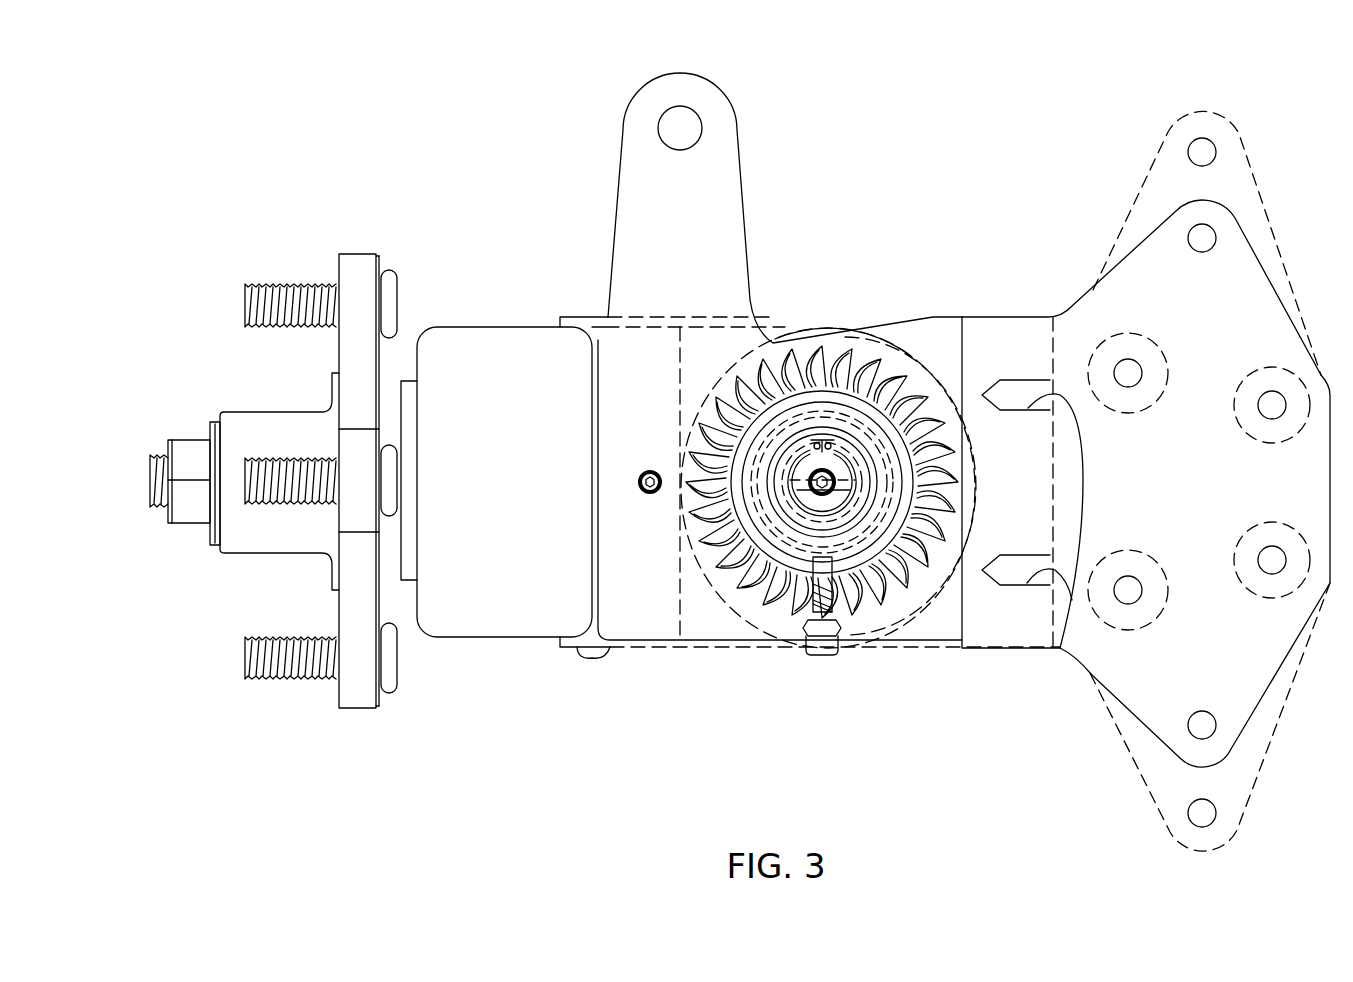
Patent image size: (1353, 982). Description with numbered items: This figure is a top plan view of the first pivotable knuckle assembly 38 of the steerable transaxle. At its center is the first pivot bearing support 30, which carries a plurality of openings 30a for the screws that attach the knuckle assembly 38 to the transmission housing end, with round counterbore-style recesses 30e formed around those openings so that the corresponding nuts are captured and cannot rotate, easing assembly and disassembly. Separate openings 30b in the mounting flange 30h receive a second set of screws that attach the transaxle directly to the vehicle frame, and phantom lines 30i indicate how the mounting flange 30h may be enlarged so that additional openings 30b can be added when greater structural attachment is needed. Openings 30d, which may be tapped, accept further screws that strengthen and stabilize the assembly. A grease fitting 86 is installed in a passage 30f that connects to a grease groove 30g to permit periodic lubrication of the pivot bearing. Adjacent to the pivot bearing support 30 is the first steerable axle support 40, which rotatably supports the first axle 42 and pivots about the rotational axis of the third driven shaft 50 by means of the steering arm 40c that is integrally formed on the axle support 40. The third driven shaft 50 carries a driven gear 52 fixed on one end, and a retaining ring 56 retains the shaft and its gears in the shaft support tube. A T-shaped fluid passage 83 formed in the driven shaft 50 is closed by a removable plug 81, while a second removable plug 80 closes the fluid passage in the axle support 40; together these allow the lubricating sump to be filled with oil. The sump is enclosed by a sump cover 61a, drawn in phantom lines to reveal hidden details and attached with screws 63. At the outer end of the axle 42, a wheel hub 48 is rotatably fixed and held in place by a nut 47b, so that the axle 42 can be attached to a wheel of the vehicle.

The first pivotable knuckle assembly 38 is at (281, 82).
The wheel hub 48 is at (357, 254).
The nut 47b is at (190, 526).
The first axle 42 is at (150, 482).
The first steerable axle support 40 is at (488, 494).
The steering arm 40c is at (622, 160).
The sump cover 61a is at (565, 317).
The screw 63 is at (585, 657).
The removable plug 80 is at (648, 470).
The T-shaped fluid passage 83 is at (800, 485).
The retaining ring 56 is at (838, 450).
The third driven shaft 50 is at (815, 502).
The driven gear 52 is at (742, 573).
The removable plug 81 is at (835, 487).
The grease fitting 86 is at (828, 634).
The passage 30f is at (833, 563).
The grease groove 30g is at (870, 540).
The first pivot bearing support 30 is at (998, 496).
The mounting flange 30h is at (1148, 235).
The phantom lines 30i is at (1150, 170).
The opening 30d is at (1066, 648).
The recess 30e is at (1115, 348).
The opening 30a is at (1272, 560).
The opening 30b is at (1195, 150).